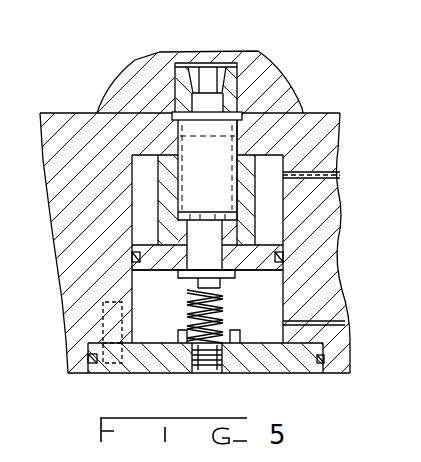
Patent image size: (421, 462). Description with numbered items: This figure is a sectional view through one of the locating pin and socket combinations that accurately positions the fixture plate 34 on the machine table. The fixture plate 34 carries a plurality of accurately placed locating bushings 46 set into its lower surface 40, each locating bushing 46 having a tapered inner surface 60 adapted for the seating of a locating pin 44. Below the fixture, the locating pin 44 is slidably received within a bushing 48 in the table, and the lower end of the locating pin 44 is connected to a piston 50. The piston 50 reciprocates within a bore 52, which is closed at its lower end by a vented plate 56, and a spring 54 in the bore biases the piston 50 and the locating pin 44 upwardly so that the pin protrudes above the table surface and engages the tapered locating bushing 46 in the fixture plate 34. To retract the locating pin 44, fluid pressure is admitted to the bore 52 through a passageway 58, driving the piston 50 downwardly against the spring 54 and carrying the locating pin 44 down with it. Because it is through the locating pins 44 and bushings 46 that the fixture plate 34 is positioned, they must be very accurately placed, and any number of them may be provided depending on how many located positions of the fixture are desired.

The fixture plate 34 is at (285, 78).
The lower surface of fixture plate 40 is at (104, 127).
The locating pin 44 is at (178, 153).
The locating bushing 46 is at (233, 77).
The bushing 48 is at (233, 143).
The piston 50 is at (258, 260).
The bore 52 is at (282, 203).
The spring 54 is at (224, 310).
The vented plate 56 is at (163, 368).
The passageway 58 is at (336, 175).
The tapered inner surface 60 is at (210, 73).